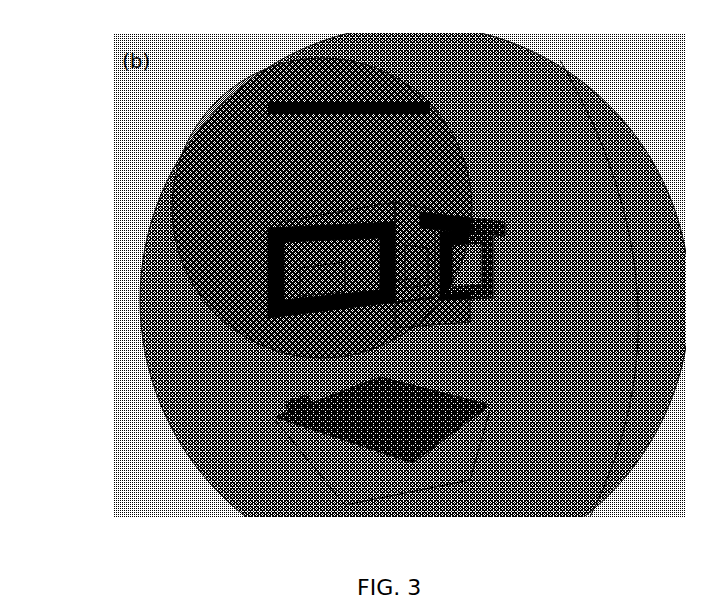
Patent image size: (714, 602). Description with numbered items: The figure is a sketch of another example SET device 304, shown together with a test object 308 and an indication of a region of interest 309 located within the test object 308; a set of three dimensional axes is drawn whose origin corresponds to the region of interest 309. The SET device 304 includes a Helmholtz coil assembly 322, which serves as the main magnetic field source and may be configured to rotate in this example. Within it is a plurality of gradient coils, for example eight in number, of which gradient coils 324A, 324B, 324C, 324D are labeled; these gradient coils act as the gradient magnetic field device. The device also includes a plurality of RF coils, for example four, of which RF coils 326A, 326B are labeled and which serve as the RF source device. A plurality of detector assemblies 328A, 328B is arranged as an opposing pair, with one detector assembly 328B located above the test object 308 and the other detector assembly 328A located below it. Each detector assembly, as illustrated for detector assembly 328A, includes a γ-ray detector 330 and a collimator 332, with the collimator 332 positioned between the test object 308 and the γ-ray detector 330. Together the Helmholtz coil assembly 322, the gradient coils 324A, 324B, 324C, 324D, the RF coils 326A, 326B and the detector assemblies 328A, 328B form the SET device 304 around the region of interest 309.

The SET device 304 is at (96, 36).
The test object 308 is at (334, 282).
The region of interest 309 is at (395, 291).
The Helmholtz coil assembly 322 is at (586, 138).
The gradient coil 324A is at (338, 207).
The gradient coil 324B is at (407, 205).
The gradient coil 324C is at (414, 309).
The gradient coil 324D is at (497, 247).
The RF coil 326A is at (447, 225).
The RF coil 326B is at (414, 218).
The detector assembly 328A is at (342, 494).
The detector assembly 328B is at (300, 52).
The γ-ray detector 330 is at (419, 479).
The collimator 332 is at (296, 407).